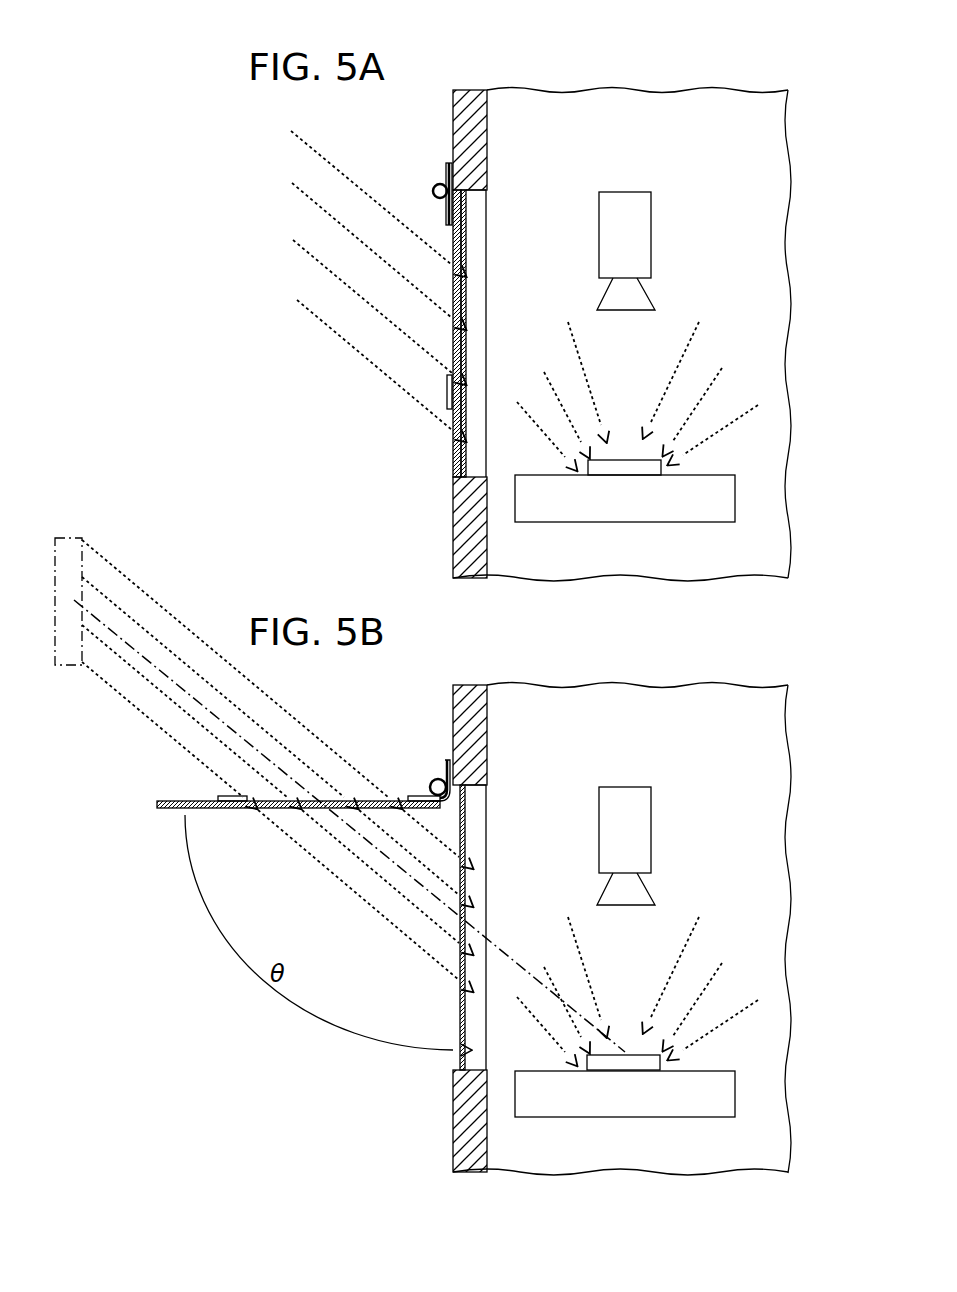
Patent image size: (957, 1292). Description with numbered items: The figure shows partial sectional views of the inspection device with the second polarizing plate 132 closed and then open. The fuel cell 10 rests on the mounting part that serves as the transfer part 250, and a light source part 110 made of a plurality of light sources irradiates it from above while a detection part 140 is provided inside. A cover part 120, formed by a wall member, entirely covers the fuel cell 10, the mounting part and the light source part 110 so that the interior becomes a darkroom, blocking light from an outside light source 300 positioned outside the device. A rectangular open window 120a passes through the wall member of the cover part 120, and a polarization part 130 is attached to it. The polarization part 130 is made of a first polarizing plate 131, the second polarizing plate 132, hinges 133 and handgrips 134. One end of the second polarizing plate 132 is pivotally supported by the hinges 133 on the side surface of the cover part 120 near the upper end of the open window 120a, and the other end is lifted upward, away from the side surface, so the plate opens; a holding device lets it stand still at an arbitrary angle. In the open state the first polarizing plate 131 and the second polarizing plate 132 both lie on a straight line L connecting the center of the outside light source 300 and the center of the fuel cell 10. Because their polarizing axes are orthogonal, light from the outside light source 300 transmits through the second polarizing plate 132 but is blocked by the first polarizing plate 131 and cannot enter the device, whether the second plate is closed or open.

In FIG. 5A, the fuel cell 10 is at (661, 468).
In FIG. 5B, the fuel cell 10 is at (660, 1063).
In FIG. 5A, the light source part 110 is at (762, 291).
In FIG. 5B, the light source part 110 is at (762, 886).
In FIG. 5A, the cover part 120 is at (452, 517).
In FIG. 5B, the cover part 120 is at (452, 1112).
In FIG. 5A, the open window 120a is at (478, 193).
In FIG. 5B, the open window 120a is at (478, 788).
In FIG. 5A, the polarization part 130 is at (405, 306).
In FIG. 5A, the first polarizing plate 131 is at (466, 226).
In FIG. 5B, the first polarizing plate 131 is at (460, 1003).
In FIG. 5A, the second polarizing plate 132 is at (452, 252).
In FIG. 5B, the second polarizing plate 132 is at (170, 810).
In FIG. 5A, the hinge 133 is at (441, 183).
In FIG. 5B, the hinge 133 is at (440, 779).
In FIG. 5A, the handgrip 134 is at (450, 396).
In FIG. 5B, the handgrip 134 is at (232, 791).
In FIG. 5A, the detection part 140 is at (652, 233).
In FIG. 5B, the detection part 140 is at (652, 828).
In FIG. 5A, the transfer part 250 is at (735, 494).
In FIG. 5B, the transfer part 250 is at (735, 1089).
In FIG. 5B, the outside light source 300 is at (78, 536).
In FIG. 5B, the straight line L is at (160, 672).